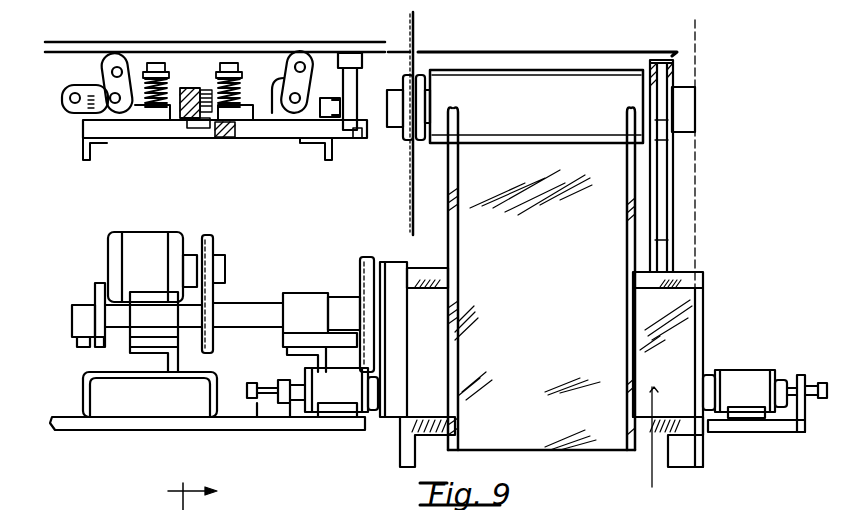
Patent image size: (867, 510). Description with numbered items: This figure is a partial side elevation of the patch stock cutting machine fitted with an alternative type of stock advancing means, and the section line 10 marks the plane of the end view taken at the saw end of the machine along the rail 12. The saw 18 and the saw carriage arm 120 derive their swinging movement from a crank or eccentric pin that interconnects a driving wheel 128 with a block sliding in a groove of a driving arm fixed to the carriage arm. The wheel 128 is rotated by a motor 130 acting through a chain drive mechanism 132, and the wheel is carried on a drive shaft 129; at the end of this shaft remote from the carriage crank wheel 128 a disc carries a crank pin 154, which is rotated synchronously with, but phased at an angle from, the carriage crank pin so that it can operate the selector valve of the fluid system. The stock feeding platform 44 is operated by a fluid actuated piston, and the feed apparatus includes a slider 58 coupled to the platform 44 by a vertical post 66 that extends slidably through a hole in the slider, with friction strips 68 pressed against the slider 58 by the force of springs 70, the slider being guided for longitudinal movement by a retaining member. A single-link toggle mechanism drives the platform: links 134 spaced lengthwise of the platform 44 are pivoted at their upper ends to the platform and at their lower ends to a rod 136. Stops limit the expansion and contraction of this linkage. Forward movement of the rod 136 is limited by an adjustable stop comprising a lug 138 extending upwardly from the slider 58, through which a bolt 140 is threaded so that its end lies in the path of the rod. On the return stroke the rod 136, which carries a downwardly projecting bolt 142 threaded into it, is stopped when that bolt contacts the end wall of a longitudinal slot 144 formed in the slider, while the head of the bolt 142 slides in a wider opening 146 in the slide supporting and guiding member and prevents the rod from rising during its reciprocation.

The section line 10 is at (658, 30).
The guide rail 12 is at (552, 52).
The saw 18 is at (417, 36).
The stock feeding platform 44 is at (218, 46).
The slider 58 is at (333, 124).
The vertical post 66 is at (357, 92).
The friction strips 68 is at (254, 110).
The springs 70 is at (218, 88).
The saw carriage arm 120 is at (627, 213).
The driving wheel 128 is at (363, 280).
The drive shaft 129 is at (258, 328).
The motor 130 is at (146, 237).
The chain drive mechanism 132 is at (214, 297).
The links 134 is at (107, 83).
The rod 136 is at (77, 113).
The lug 138 is at (358, 134).
The bolt 140 is at (340, 107).
The bolt 142 is at (200, 126).
The longitudinal slot 144 is at (187, 125).
The wider opening 146 is at (217, 137).
The crank pin 154 is at (77, 308).